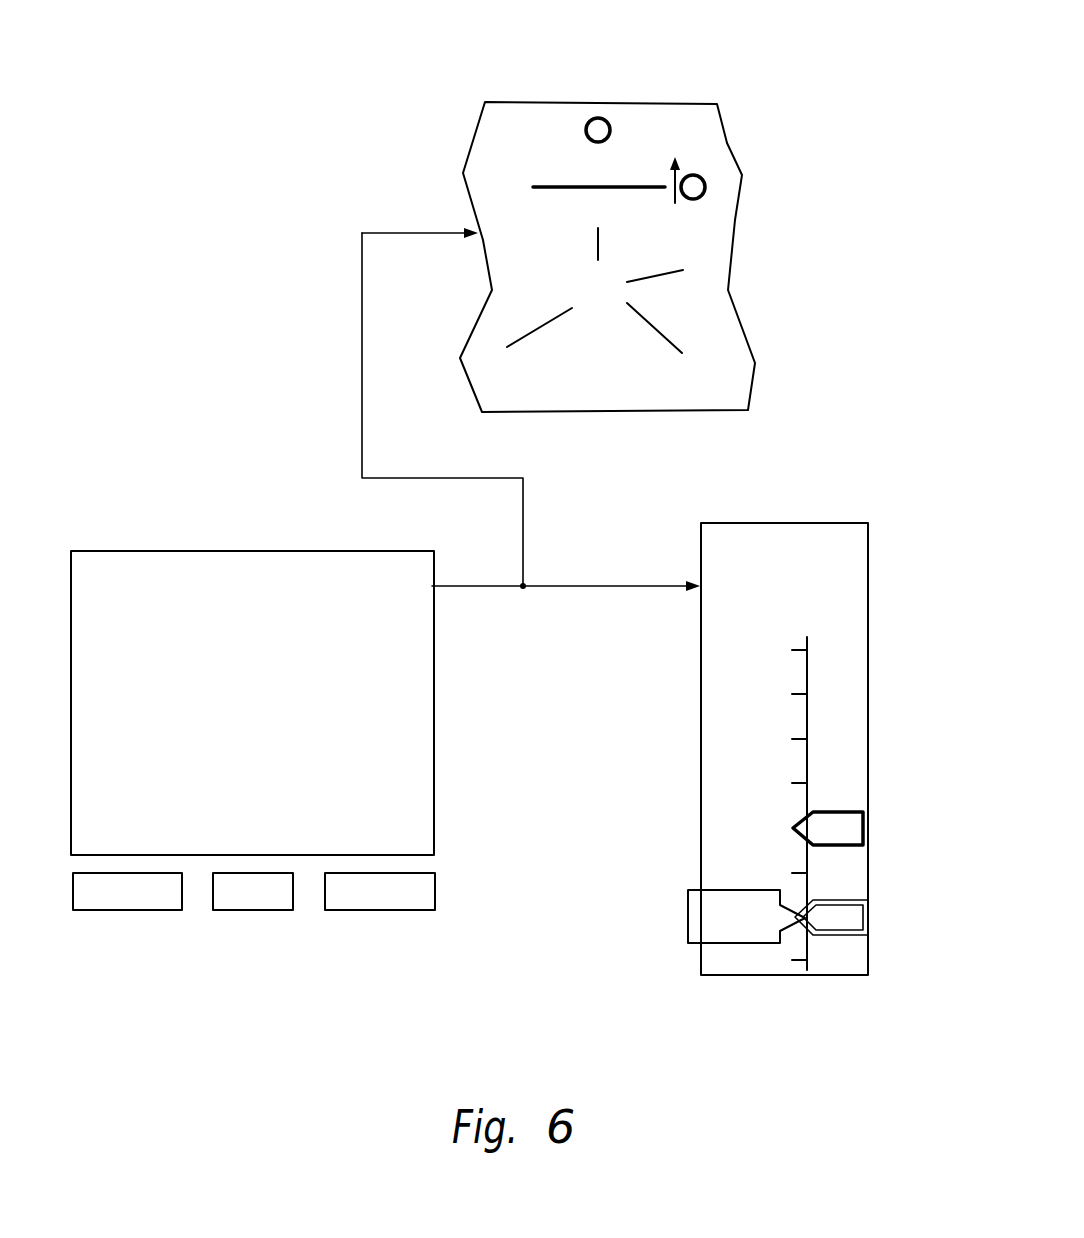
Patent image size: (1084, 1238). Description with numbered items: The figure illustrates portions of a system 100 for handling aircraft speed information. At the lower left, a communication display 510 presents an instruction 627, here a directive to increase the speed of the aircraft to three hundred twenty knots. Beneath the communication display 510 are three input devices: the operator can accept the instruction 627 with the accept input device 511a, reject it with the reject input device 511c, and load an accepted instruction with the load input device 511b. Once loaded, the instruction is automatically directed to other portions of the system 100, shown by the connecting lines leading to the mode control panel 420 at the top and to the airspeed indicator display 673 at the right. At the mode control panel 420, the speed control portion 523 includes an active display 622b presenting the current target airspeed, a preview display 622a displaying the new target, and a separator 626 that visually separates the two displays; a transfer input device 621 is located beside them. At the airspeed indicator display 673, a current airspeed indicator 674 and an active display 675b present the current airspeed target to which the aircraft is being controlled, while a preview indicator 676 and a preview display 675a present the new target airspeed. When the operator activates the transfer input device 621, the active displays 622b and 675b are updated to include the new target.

The system 100 is at (172, 238).
The speed control portion 523 is at (602, 82).
The mode control panel 420 is at (690, 102).
The active display 622b is at (546, 162).
The separator 626 is at (533, 187).
The preview display 622a is at (546, 212).
The transfer input device 621 is at (708, 187).
The instruction 627 is at (82, 605).
The communication display 510 is at (242, 551).
The accept input device 511a is at (133, 910).
The load input device 511b is at (240, 910).
The reject input device 511c is at (387, 910).
The active display 675b is at (713, 558).
The preview display 675a is at (713, 597).
The airspeed indicator display 673 is at (910, 603).
The preview indicator 676 is at (842, 817).
The current airspeed indicator 674 is at (850, 937).